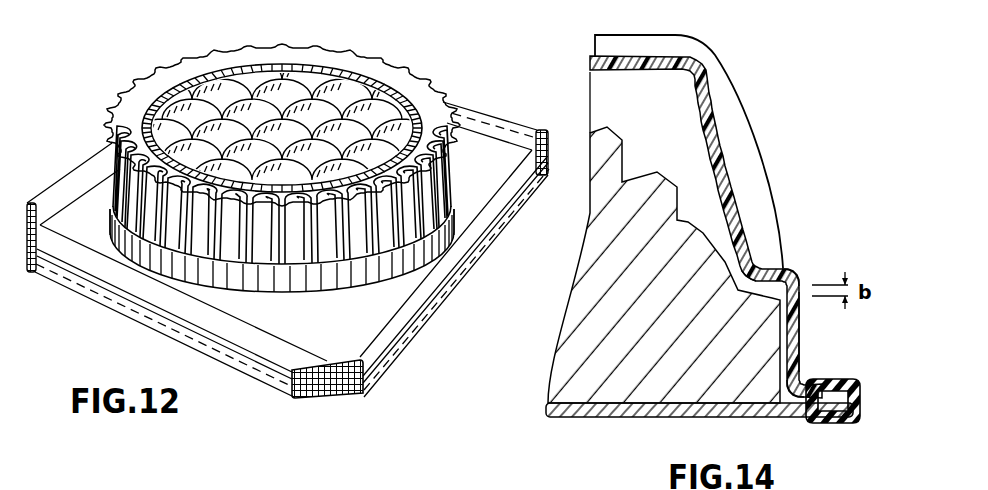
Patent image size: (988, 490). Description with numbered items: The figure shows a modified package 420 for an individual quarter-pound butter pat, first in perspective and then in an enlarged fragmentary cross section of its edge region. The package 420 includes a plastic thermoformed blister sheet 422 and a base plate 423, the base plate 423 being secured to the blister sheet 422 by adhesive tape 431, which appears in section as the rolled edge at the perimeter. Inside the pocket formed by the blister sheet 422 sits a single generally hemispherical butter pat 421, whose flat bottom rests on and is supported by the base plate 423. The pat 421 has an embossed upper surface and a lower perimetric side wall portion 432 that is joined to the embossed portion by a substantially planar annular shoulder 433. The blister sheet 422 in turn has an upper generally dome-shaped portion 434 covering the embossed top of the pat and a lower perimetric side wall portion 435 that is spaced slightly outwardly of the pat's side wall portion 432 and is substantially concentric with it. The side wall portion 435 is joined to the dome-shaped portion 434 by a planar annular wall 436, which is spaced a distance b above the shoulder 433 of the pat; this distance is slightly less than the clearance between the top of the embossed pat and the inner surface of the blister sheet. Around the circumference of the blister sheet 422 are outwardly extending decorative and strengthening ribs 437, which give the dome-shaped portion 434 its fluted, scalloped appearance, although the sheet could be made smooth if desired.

In FIG. 12, the package 420 is at (488, 104).
In FIG. 14, the butter pat 421 is at (590, 345).
In FIG. 12, the blister sheet 422 is at (302, 52).
In FIG. 14, the blister sheet 422 is at (710, 123).
In FIG. 12, the base plate 423 is at (90, 233).
In FIG. 14, the base plate 423 is at (637, 411).
In FIG. 12, the adhesive tape 431 is at (75, 180).
In FIG. 14, the adhesive tape 431 is at (840, 427).
In FIG. 14, the lower perimetric side wall portion 432 is at (799, 333).
In FIG. 14, the annular shoulder 433 is at (757, 266).
In FIG. 12, the dome-shaped portion 434 is at (133, 118).
In FIG. 14, the lower perimetric side wall portion 435 is at (799, 368).
In FIG. 14, the planar annular wall 436 is at (790, 270).
In FIG. 12, the ribs 437 is at (420, 87).